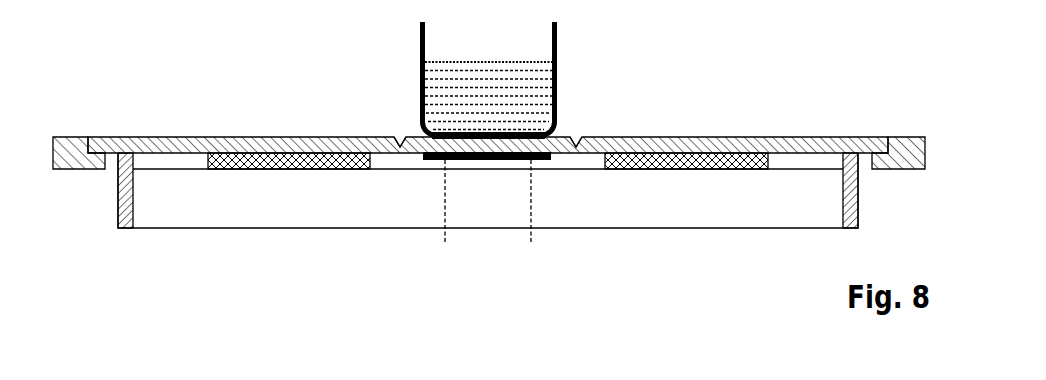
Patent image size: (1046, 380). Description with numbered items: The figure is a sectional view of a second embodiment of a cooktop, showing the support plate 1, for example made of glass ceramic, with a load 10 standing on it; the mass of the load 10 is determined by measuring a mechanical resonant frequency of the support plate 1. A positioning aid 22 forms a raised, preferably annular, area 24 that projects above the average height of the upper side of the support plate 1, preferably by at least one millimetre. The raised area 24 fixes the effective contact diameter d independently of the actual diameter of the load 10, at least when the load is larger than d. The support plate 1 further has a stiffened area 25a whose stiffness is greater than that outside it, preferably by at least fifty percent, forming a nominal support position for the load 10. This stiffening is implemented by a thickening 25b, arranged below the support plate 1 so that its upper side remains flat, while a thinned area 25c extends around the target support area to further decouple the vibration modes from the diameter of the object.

The support plate 1 is at (207, 137).
The load 10 is at (422, 75).
The positioning aid 22 is at (477, 142).
The raised area 24 is at (470, 136).
The stiffened area 25a is at (545, 143).
The thickening 25b is at (542, 158).
The thinned area 25c is at (397, 140).
The effective contact diameter d is at (531, 237).